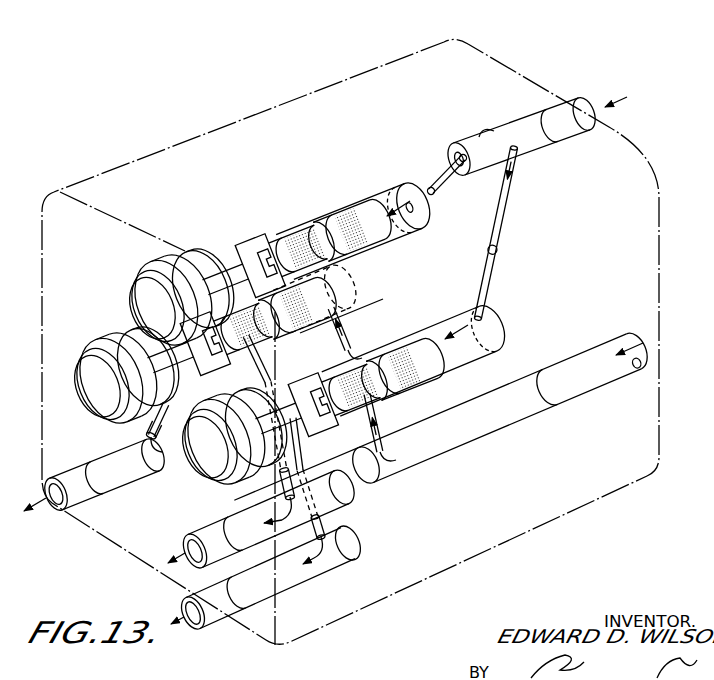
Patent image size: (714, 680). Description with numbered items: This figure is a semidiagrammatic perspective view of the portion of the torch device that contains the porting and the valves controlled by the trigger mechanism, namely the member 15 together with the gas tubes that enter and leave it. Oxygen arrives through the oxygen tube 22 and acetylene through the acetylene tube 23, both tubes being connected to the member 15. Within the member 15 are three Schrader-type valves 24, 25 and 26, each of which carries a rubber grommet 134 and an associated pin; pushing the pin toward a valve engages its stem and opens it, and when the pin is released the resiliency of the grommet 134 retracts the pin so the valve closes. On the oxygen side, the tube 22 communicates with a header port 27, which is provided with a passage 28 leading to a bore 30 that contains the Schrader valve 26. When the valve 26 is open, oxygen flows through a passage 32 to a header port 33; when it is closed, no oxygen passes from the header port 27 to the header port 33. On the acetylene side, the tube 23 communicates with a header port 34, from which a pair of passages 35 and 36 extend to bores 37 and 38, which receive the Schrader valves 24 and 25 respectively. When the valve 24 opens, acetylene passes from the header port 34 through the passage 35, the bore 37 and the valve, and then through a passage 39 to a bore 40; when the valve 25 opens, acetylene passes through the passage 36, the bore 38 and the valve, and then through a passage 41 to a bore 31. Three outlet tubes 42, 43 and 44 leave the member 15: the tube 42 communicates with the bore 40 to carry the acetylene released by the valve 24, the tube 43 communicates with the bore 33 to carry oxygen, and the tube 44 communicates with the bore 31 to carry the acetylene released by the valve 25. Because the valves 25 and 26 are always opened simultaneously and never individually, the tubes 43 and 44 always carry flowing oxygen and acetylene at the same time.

The member 15 is at (333, 92).
The oxygen tube 22 is at (637, 364).
The acetylene tube 23 is at (575, 97).
The Schrader valve 24 is at (260, 231).
The Schrader valve 25 is at (380, 367).
The Schrader valve 26 is at (270, 343).
The header port 27 is at (464, 432).
The passage 28 is at (355, 306).
The bore 30 is at (355, 278).
The bore 31 is at (318, 572).
The passage 32 is at (143, 438).
The header port 33 is at (115, 485).
The header port 34 is at (484, 131).
The passage 35 is at (437, 193).
The passage 36 is at (498, 248).
The bore 37 is at (370, 199).
The bore 38 is at (505, 329).
The passage 39 is at (250, 378).
The bore 40 is at (233, 520).
The passage 41 is at (306, 428).
The tube 42 is at (186, 538).
The tube 43 is at (77, 506).
The tube 44 is at (218, 607).
The rubber grommet 134 is at (133, 282).